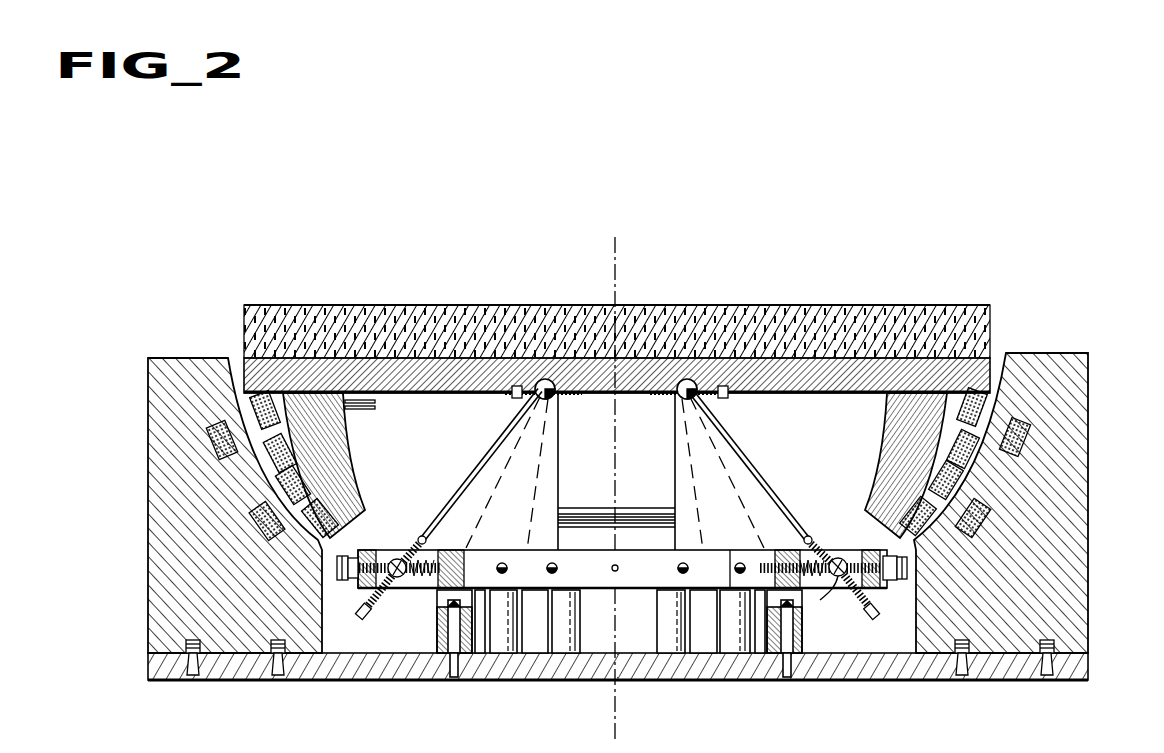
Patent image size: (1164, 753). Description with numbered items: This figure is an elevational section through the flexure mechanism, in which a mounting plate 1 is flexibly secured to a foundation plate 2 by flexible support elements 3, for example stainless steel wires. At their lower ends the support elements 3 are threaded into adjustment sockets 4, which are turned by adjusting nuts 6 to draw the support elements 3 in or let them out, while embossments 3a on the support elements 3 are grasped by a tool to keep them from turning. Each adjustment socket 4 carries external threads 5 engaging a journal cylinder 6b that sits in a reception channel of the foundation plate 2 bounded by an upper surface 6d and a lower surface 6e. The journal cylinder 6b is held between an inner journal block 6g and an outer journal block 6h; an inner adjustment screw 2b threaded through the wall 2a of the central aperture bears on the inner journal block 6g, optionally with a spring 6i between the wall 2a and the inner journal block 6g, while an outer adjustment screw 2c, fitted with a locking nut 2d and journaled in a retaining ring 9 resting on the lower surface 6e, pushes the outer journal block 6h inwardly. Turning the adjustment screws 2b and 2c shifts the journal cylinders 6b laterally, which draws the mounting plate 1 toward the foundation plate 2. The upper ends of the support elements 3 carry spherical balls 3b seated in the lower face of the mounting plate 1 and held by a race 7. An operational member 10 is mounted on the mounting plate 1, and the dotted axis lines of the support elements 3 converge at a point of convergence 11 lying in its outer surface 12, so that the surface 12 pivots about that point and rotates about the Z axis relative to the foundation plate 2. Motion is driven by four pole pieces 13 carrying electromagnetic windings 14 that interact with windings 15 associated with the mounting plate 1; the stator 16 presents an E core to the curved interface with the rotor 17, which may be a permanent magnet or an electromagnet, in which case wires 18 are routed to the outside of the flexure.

The mounting plate 1 is at (952, 372).
The foundation plate 2 is at (645, 600).
The wall 2a is at (664, 578).
The inner adjustment screws 2b is at (745, 550).
The outer adjustment screws 2c is at (360, 592).
The locking nut 2d is at (343, 543).
The support elements 3 is at (765, 470).
The embossments 3a is at (836, 558).
The spherical balls 3b is at (540, 385).
The adjustment sockets 4 is at (832, 555).
The threads 5 is at (395, 600).
The adjusting nuts 6 is at (372, 613).
The journal cylinders 6b is at (855, 600).
The upper surface 6d is at (421, 530).
The lower surface 6e is at (870, 612).
The inner journal block 6g is at (842, 590).
The outer journal block 6h is at (868, 555).
The springs 6i is at (790, 550).
The race 7 is at (722, 395).
The retaining ring 9 is at (884, 560).
The operational member 10 is at (362, 325).
The point of convergence 11 is at (617, 300).
The outer surface 12 is at (722, 305).
The pole pieces 13 is at (137, 545).
The electromagnetic windings 14 is at (222, 438).
The windings 15 is at (280, 458).
The stator 16 is at (172, 578).
The rotor 17 is at (330, 482).
The wires 18 is at (377, 404).